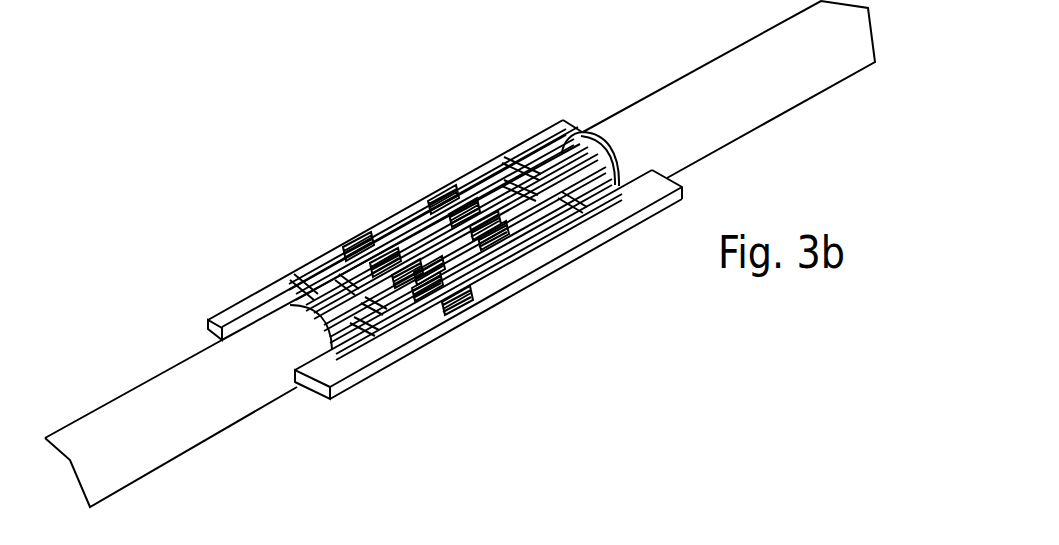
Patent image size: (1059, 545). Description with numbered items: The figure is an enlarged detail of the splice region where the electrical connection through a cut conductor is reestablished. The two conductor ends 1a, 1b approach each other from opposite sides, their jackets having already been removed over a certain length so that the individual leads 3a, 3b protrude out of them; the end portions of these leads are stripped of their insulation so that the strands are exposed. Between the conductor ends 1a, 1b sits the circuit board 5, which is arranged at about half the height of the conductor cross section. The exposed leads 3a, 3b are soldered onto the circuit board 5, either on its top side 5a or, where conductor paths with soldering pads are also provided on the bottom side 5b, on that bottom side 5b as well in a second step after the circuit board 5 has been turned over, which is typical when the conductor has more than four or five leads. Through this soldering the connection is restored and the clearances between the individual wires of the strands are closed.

The conductor end 1a is at (188, 406).
The conductor end 1b is at (718, 93).
The individual lead 3a is at (418, 318).
The individual lead 3b is at (390, 312).
The circuit board 5 is at (445, 235).
The top side of the circuit board 5a is at (540, 153).
The bottom side of the circuit board 5b is at (587, 253).